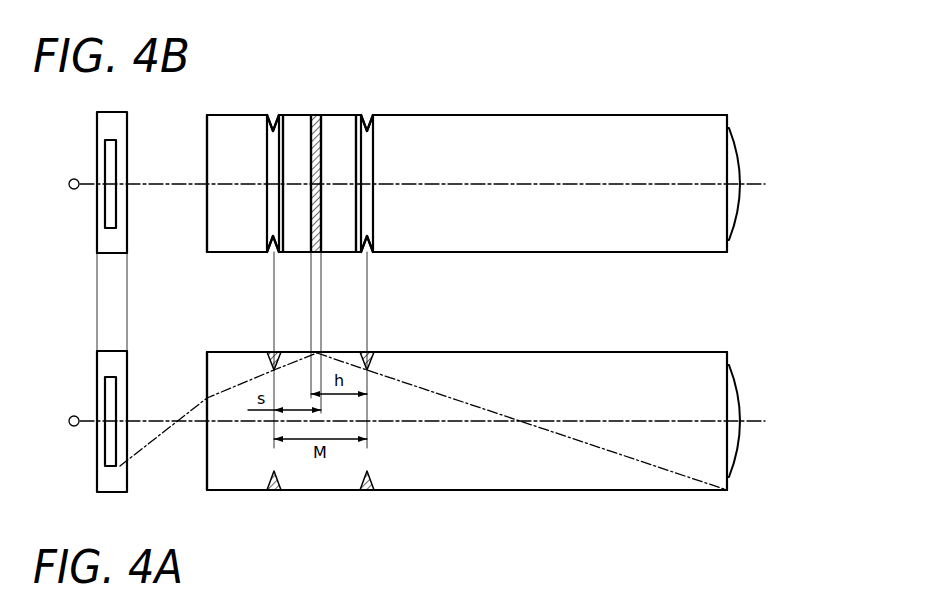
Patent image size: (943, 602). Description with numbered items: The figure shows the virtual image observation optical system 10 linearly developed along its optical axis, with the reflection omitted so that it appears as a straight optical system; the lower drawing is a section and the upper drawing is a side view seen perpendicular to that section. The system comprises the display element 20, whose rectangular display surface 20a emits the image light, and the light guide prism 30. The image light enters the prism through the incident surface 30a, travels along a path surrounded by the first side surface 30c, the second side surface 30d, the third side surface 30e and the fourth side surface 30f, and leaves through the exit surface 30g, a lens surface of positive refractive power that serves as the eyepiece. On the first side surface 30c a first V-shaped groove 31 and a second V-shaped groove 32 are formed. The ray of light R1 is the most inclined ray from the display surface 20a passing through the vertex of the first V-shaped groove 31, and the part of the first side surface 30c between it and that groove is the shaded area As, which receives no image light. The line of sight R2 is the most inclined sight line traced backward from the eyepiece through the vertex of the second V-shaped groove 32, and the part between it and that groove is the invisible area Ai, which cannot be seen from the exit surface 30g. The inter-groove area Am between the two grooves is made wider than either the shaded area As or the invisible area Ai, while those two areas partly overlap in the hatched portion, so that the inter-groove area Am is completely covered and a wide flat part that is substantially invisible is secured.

In FIG. 4A, the virtual image observation optical system 10 is at (300, 568).
In FIG. 4B, the display element 20 is at (97, 127).
In FIG. 4A, the display element 20 is at (97, 362).
In FIG. 4B, the display surface 20a is at (110, 160).
In FIG. 4A, the display surface 20a is at (110, 394).
In FIG. 4A, the light guide prism 30 is at (684, 396).
In FIG. 4B, the incident surface 30a is at (207, 242).
In FIG. 4A, the incident surface 30a is at (207, 480).
In FIG. 4B, the first side surface 30c is at (568, 130).
In FIG. 4A, the first side surface 30c is at (505, 350).
In FIG. 4B, the second side surface 30d is at (518, 254).
In FIG. 4A, the second side surface 30d is at (545, 471).
In FIG. 4A, the third side surface 30e is at (473, 495).
In FIG. 4B, the fourth side surface 30f is at (499, 112).
In FIG. 4B, the exit surface 30g is at (733, 206).
In FIG. 4A, the exit surface 30g is at (733, 441).
In FIG. 4B, the first V-shaped groove 31 is at (268, 253).
In FIG. 4A, the first V-shaped groove 31 is at (270, 492).
In FIG. 4B, the second V-shaped groove 32 is at (372, 253).
In FIG. 4A, the second V-shaped groove 32 is at (368, 492).
In FIG. 4B, the shaded area As is at (299, 138).
In FIG. 4B, the inter-groove area Am is at (318, 93).
In FIG. 4B, the invisible area Ai is at (335, 137).
In FIG. 4A, the ray of light R1 is at (192, 405).
In FIG. 4A, the line of sight R2 is at (473, 400).